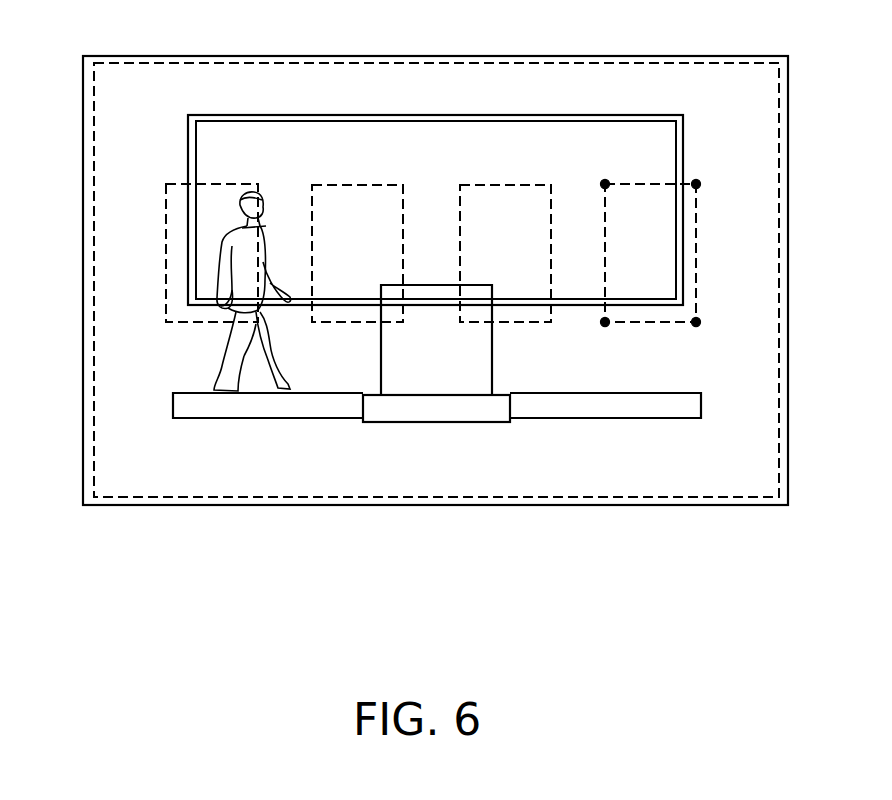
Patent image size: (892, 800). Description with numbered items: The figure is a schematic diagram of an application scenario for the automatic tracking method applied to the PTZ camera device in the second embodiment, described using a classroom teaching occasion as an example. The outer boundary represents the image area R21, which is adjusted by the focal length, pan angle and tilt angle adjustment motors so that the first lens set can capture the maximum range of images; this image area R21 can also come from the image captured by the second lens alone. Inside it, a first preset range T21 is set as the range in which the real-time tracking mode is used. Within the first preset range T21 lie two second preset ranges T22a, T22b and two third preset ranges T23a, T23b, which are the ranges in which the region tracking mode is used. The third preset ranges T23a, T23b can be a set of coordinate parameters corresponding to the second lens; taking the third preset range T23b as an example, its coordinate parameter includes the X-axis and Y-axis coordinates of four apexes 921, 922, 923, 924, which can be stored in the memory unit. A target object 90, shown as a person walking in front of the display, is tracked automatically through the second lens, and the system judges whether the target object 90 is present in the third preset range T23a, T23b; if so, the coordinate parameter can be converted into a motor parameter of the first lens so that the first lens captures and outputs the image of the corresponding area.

The first preset range T21 is at (143, 62).
The image area R21 is at (241, 56).
The second preset range T22a is at (212, 182).
The third preset range T23a is at (330, 183).
The second preset range T22b is at (534, 183).
The third preset range T23b is at (661, 183).
The apex 921 is at (700, 181).
The apex 922 is at (699, 325).
The apex 923 is at (608, 325).
The apex 924 is at (608, 187).
The target object 90 is at (230, 352).